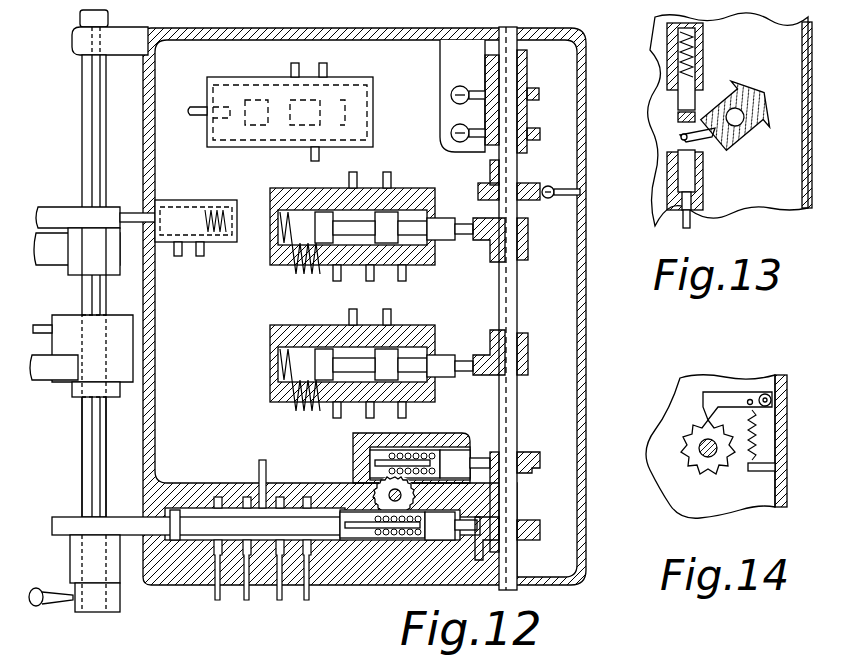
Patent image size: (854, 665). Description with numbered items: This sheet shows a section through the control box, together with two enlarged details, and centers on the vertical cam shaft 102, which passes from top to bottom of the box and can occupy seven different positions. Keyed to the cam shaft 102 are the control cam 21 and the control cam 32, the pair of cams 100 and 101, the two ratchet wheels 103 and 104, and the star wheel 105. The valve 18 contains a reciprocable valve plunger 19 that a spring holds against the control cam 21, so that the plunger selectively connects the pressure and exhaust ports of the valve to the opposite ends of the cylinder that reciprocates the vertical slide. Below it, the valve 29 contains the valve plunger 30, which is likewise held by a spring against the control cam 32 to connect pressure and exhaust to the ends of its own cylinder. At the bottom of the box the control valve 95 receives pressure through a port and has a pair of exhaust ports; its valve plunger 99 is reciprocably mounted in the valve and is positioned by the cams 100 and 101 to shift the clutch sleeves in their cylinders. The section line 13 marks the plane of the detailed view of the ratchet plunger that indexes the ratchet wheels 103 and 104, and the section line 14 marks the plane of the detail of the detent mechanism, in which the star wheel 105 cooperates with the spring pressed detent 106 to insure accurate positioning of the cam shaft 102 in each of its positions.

In FIG. 12, the section line 13— 13 is at (555, 95).
In FIG. 12, the section line 14— 14 is at (600, 209).
In FIG. 12, the valve 18 is at (300, 265).
In FIG. 12, the valve plunger 19 is at (445, 240).
In FIG. 12, the control cam 21 is at (528, 240).
In FIG. 12, the valve 29 is at (290, 402).
In FIG. 12, the valve plunger 30 is at (445, 360).
In FIG. 12, the control cam 32 is at (528, 360).
In FIG. 12, the control valve 95 is at (284, 490).
In FIG. 12, the valve plunger 99 is at (345, 560).
In FIG. 12, the cam 100 is at (532, 530).
In FIG. 12, the cam 101 is at (534, 475).
In FIG. 12, the vertical cam shaft 102 is at (517, 418).
In FIG. 12, the ratchet wheel 103 is at (538, 140).
In FIG. 12, the ratchet wheel 104 is at (536, 82).
In FIG. 12, the star wheel 105 is at (540, 185).
In FIG. 14, the star wheel 105 is at (688, 460).
In FIG. 14, the spring pressed detent 106 is at (735, 400).